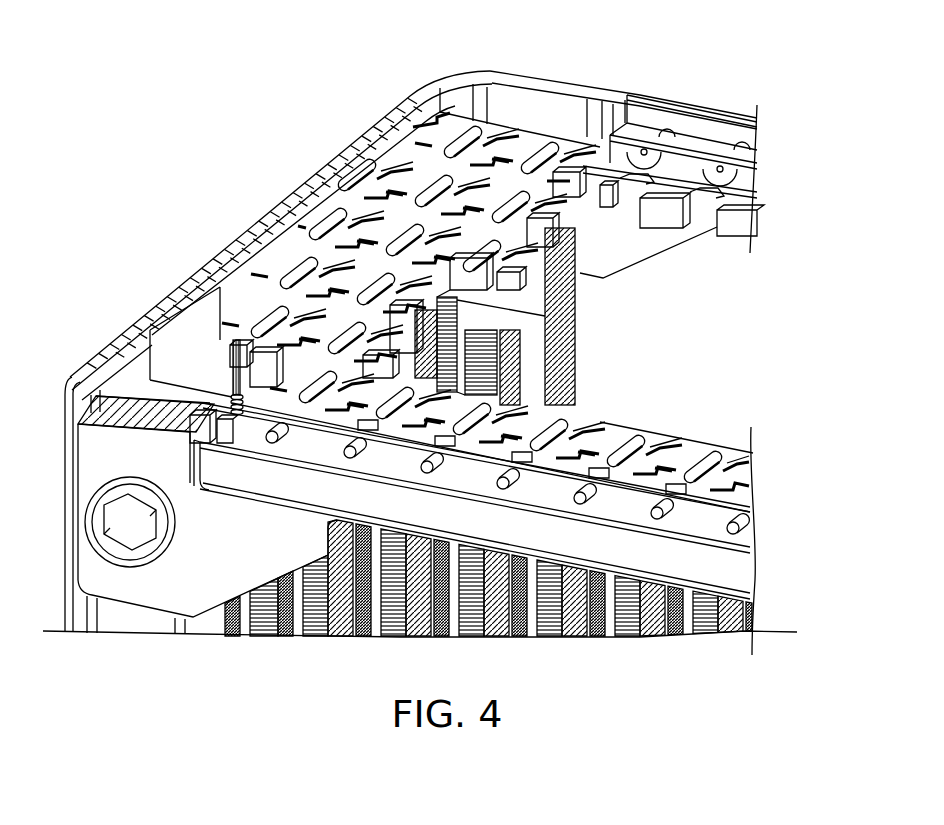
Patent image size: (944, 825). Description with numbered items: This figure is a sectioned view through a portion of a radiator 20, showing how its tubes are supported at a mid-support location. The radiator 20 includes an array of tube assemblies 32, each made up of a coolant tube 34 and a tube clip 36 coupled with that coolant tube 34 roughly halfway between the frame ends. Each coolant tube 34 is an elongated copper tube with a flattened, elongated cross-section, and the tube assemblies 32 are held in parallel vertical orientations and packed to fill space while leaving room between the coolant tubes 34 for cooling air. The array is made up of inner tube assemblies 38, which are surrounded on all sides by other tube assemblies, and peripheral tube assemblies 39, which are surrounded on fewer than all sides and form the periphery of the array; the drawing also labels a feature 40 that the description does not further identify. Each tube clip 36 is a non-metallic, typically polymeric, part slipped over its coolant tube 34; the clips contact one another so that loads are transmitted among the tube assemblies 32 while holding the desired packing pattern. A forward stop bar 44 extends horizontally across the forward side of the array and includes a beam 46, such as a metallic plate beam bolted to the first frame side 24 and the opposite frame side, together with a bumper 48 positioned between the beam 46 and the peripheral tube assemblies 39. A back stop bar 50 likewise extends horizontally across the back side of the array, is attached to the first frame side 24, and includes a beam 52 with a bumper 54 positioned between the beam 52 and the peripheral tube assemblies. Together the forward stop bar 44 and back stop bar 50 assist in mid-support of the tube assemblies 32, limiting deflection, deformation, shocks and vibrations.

The radiator 20 is at (212, 145).
The first frame side 24 is at (304, 184).
The tube assemblies 32 is at (592, 343).
The coolant tube 34 is at (498, 212).
The tube clip 36 is at (572, 225).
The inner tube assemblies 38 is at (540, 150).
The peripheral tube assemblies 39 is at (446, 128).
The tab 40 is at (426, 110).
The forward stop bar 44 is at (452, 510).
The beam 46 is at (585, 545).
The bumper 48 is at (638, 482).
The back stop bar 50 is at (682, 92).
The beam 52 is at (748, 105).
The bumper 54 is at (753, 183).